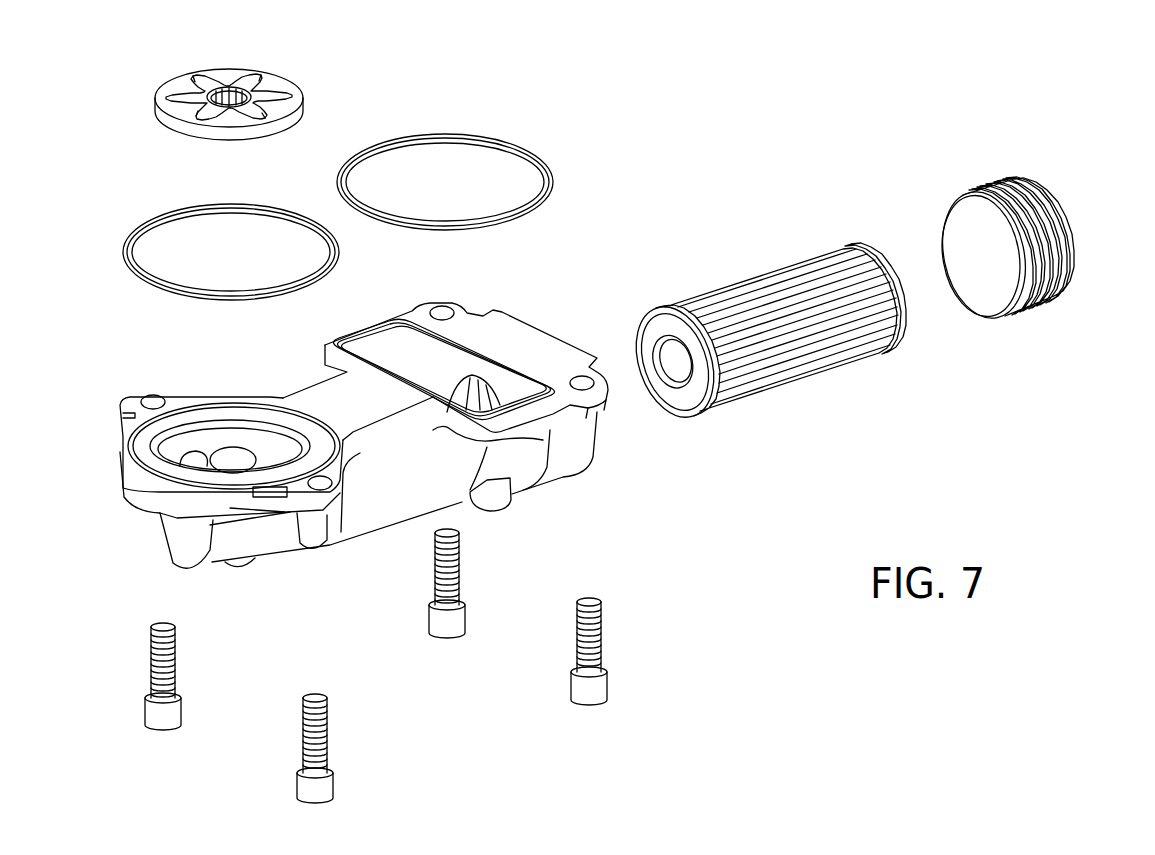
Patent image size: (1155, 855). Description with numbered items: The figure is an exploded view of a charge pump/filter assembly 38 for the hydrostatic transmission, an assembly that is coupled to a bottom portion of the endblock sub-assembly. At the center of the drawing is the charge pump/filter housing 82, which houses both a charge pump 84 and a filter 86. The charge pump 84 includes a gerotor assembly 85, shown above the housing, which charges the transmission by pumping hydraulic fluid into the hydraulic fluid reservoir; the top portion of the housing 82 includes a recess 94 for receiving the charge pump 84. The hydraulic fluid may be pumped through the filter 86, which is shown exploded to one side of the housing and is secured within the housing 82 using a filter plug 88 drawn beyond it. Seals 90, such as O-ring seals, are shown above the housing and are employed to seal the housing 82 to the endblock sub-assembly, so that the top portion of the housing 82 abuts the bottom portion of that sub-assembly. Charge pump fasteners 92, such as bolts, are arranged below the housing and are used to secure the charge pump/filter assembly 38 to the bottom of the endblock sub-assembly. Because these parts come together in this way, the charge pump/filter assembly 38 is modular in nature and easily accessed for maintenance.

The charge pump/filter assembly 38 is at (718, 128).
The charge pump/filter housing 82 is at (376, 520).
The charge pump 84 is at (166, 92).
The gerotor assembly 85 is at (203, 88).
The filter 86 is at (773, 384).
The filter plug 88 is at (1065, 268).
The seals 90 is at (127, 233).
The charge pump fasteners 92 is at (157, 731).
The recess 94 is at (215, 440).